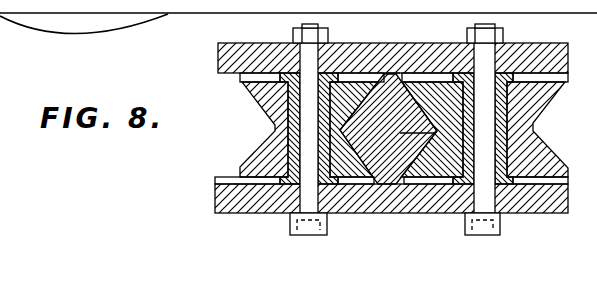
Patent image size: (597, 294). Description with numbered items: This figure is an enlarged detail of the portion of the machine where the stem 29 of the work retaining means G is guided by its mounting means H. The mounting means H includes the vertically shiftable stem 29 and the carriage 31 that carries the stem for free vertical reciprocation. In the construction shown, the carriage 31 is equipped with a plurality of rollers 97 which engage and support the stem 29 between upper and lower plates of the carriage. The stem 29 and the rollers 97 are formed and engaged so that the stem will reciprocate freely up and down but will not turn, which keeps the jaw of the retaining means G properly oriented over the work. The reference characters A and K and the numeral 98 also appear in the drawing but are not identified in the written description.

The curved guide line A is at (98, 3).
The mounting means H is at (212, 58).
The work retaining means G is at (390, 73).
The assembly K is at (587, 119).
The stem 29 is at (400, 136).
The carriage 31 is at (215, 198).
The rollers 97 is at (243, 163).
The right wedge block 98 is at (561, 164).